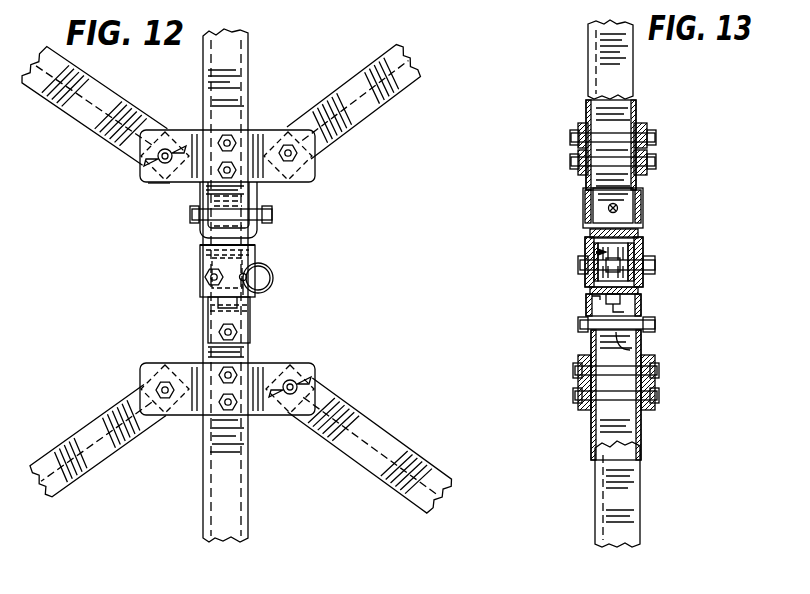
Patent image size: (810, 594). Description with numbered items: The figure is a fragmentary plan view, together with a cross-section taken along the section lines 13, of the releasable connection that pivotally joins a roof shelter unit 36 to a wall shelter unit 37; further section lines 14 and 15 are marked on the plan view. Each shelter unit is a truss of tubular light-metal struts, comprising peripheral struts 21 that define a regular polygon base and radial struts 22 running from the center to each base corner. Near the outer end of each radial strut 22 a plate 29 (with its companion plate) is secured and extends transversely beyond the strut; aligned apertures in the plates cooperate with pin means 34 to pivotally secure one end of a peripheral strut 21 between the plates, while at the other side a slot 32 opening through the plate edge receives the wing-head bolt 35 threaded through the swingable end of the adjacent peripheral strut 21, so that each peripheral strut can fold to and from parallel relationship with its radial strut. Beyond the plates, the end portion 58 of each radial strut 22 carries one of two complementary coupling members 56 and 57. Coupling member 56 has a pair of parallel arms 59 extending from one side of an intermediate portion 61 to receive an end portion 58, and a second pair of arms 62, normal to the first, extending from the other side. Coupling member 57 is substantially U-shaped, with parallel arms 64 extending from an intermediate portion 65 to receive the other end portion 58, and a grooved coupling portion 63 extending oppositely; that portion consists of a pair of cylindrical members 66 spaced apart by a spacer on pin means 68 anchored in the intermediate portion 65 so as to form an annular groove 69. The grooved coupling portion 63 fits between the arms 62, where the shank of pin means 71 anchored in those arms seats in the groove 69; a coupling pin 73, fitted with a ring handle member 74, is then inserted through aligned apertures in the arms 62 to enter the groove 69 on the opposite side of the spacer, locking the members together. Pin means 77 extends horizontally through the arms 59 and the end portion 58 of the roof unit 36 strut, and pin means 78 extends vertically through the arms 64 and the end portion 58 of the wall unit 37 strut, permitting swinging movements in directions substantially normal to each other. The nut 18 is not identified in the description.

In FIG. 12, the section lines 13— 13 is at (227, 65).
In FIG. 12, the section lines 14— 14 is at (135, 190).
In FIG. 12, the section lines 15— 15 is at (192, 277).
In FIG. 12, the nut 18 is at (248, 333).
In FIG. 12, the peripheral struts 21 is at (383, 66).
In FIG. 12, the radial struts 22 is at (249, 53).
In FIG. 13, the radial struts 22 is at (586, 49).
In FIG. 12, the lower metal plate 29 is at (260, 150).
In FIG. 12, the slot 32 is at (168, 148).
In FIG. 12, the pin means 34 is at (297, 153).
In FIG. 12, the wing-head bolt 35 is at (158, 188).
In FIG. 12, the roof shelter unit 36 is at (400, 107).
In FIG. 12, the wall shelter unit 37 is at (76, 421).
In FIG. 12, the coupling member 56 is at (259, 249).
In FIG. 13, the coupling member 56 is at (647, 238).
In FIG. 12, the coupling member 57 is at (252, 312).
In FIG. 13, the coupling member 57 is at (647, 300).
In FIG. 12, the end portion of radial strut 58 is at (246, 193).
In FIG. 13, the end portion of radial strut 58 is at (638, 183).
In FIG. 12, the parallel arms or flanges 59 is at (200, 203).
In FIG. 13, the parallel arms or flanges 59 is at (586, 206).
In FIG. 12, the intermediate portion 61 is at (205, 244).
In FIG. 13, the intermediate portion 61 is at (590, 241).
In FIG. 12, the parallel arms or flanges 62 is at (268, 263).
In FIG. 13, the parallel arms or flanges 62 is at (642, 255).
In FIG. 13, the grooved coupling portion 63 is at (596, 252).
In FIG. 12, the parallel arms or flanges 64 is at (210, 327).
In FIG. 13, the parallel arms or flanges 64 is at (590, 301).
In FIG. 13, the intermediate portion 65 is at (645, 290).
In FIG. 13, the cylindrical members 66 is at (640, 248).
In FIG. 13, the pin means 68 is at (614, 304).
In FIG. 13, the annular groove 69 is at (598, 270).
In FIG. 12, the pin means 71 is at (210, 283).
In FIG. 13, the pin means 71 is at (580, 265).
In FIG. 12, the coupling pin 73 is at (272, 262).
In FIG. 12, the handle member 74 is at (262, 292).
In FIG. 12, the pin means 77 is at (190, 216).
In FIG. 13, the pin means 77 is at (618, 206).
In FIG. 13, the pin means 78 is at (640, 343).